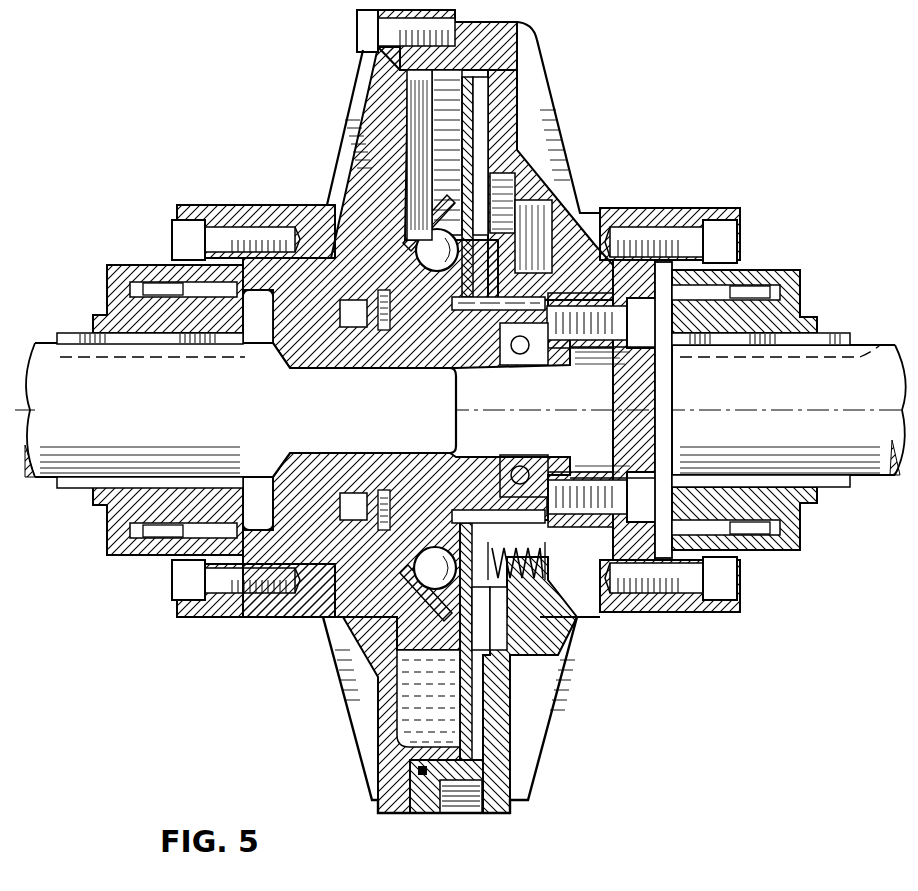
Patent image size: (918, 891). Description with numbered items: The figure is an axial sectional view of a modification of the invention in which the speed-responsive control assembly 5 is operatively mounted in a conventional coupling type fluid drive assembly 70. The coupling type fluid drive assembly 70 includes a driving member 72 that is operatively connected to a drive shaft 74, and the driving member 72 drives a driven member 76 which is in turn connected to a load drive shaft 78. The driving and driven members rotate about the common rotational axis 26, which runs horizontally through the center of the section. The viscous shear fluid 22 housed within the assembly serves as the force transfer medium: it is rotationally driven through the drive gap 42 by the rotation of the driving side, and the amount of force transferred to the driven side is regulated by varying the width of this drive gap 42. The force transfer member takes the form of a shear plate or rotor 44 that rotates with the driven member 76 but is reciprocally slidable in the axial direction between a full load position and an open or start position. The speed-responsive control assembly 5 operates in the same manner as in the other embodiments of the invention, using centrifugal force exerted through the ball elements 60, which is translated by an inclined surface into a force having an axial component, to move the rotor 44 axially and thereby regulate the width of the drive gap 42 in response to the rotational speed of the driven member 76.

The speed-responsive control assembly 5 is at (421, 208).
The viscous shear fluid 22 is at (408, 708).
The rotational axis 26 is at (138, 408).
The drive gap 42 is at (478, 125).
The shear plate or rotor 44 is at (470, 697).
The ball elements 60 is at (424, 266).
The coupling type fluid drive assembly 70 is at (316, 194).
The driving member 72 is at (115, 556).
The drive shaft 74 is at (72, 472).
The driven member 76 is at (683, 208).
The load drive shaft 78 is at (851, 462).